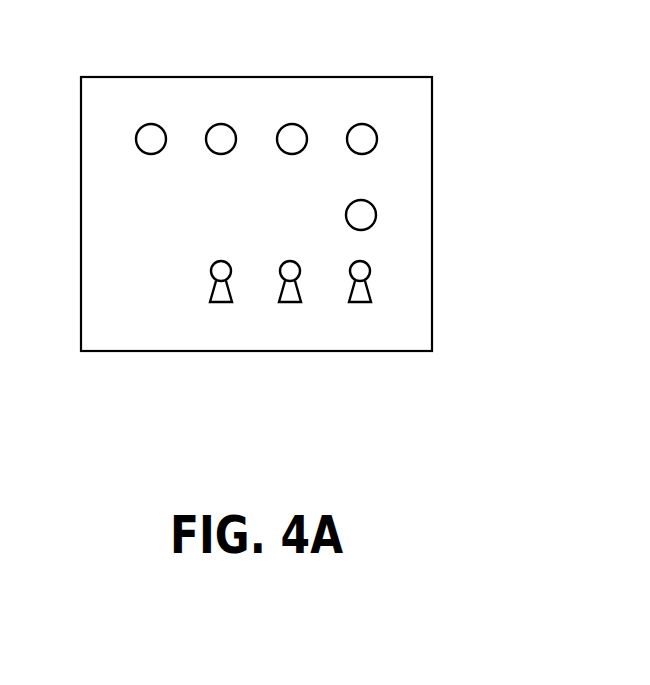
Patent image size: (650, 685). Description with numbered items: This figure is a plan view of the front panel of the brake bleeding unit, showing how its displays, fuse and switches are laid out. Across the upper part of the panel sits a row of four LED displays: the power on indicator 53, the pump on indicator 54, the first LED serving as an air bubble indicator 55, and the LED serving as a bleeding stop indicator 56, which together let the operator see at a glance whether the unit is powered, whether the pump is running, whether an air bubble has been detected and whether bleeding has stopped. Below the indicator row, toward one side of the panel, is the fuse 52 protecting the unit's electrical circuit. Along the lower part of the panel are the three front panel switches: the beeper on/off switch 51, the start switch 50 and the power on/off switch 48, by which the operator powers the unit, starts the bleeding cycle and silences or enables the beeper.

The power on/off switch 48 is at (376, 308).
The start switch 50 is at (306, 308).
The beeper on/off switch 51 is at (237, 308).
The fuse 52 is at (387, 215).
The power on indicator 53 is at (363, 113).
The pump on indicator 54 is at (293, 113).
The first LED (air bubble indicator) 55 is at (225, 113).
The LED (bleeding stop indicator) 56 is at (155, 113).